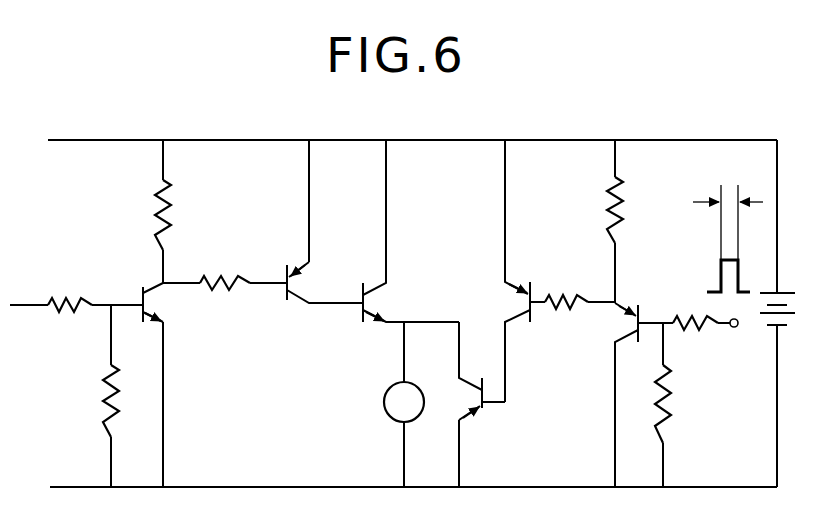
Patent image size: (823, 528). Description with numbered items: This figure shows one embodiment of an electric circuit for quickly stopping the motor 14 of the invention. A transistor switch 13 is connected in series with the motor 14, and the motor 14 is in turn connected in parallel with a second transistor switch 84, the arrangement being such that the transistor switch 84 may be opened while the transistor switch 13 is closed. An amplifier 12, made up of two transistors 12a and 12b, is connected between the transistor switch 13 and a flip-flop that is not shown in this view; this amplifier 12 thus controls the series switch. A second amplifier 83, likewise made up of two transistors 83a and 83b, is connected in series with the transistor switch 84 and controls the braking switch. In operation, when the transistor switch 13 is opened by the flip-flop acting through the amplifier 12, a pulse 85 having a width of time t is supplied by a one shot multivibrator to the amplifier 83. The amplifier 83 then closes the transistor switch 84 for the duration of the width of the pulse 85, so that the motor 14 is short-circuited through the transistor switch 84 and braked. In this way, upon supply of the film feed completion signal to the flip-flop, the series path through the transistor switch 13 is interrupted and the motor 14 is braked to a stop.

The amplifier 12 is at (330, 132).
The transistor 12a is at (165, 306).
The transistor 12b is at (283, 300).
The transistor switch 13 is at (346, 331).
The motor 14 is at (389, 410).
The amplifier 83 is at (650, 132).
The transistor 83a is at (517, 323).
The transistor 83b is at (607, 329).
The transistor switch 84 is at (450, 416).
The pulse 85 is at (718, 284).